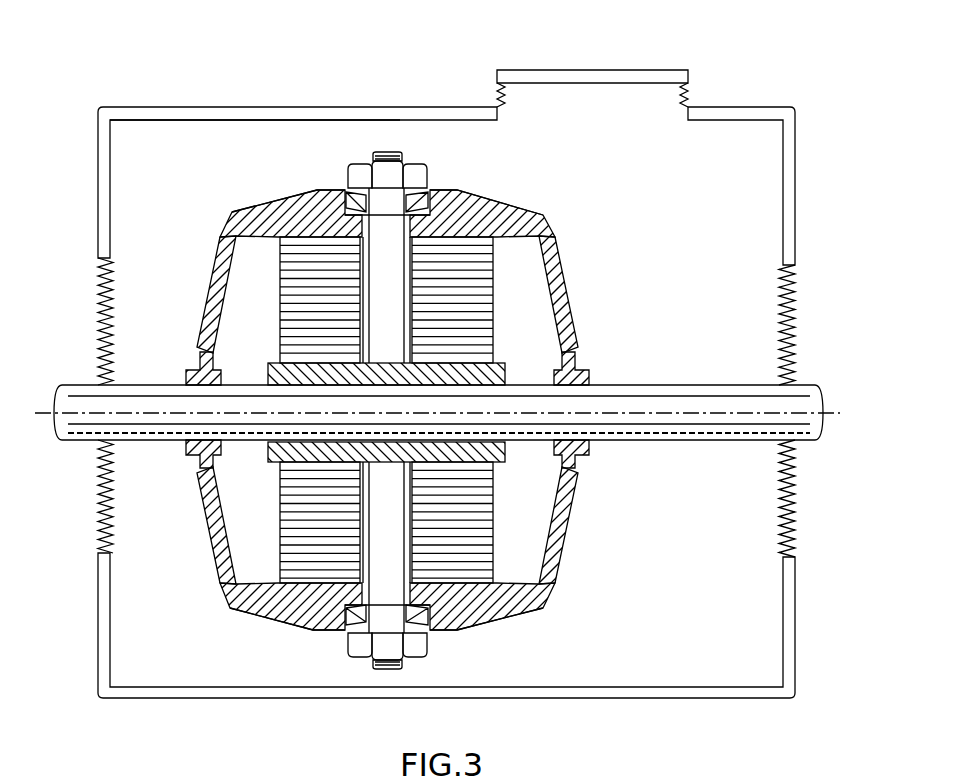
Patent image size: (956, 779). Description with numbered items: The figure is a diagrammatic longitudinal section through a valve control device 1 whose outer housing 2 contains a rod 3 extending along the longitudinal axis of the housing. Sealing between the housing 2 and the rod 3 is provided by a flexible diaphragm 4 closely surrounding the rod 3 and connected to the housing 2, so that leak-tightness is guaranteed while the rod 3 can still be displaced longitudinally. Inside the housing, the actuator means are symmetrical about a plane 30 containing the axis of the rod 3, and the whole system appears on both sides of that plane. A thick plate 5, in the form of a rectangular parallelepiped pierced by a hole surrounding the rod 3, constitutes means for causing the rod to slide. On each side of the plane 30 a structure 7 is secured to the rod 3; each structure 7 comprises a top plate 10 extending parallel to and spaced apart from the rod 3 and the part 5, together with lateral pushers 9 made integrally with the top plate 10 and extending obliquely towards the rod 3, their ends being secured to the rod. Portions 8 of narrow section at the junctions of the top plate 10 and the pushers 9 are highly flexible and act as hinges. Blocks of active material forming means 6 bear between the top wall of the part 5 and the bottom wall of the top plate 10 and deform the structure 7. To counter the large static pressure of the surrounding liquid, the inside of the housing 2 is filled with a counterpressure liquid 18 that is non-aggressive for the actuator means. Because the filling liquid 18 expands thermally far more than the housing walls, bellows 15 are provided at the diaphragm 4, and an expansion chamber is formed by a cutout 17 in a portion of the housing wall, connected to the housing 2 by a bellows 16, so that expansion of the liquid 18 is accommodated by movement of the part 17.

The valve control device 1 is at (362, 95).
The outer housing 2 is at (97, 185).
The rod 3 is at (72, 400).
The diaphragm 4 is at (98, 292).
The thick plate 5 is at (248, 605).
The means for deforming the structure 6 is at (266, 316).
The structure 7 is at (327, 186).
The portions of narrow section 8 is at (545, 225).
The lateral pushers 9 is at (565, 290).
The top plate 10 is at (490, 188).
The bellows 15 is at (97, 314).
The bellows 16 is at (700, 97).
The cutout 17 is at (633, 65).
The counterpressure liquid 18 is at (168, 145).
The plane of symmetry 30 is at (40, 425).